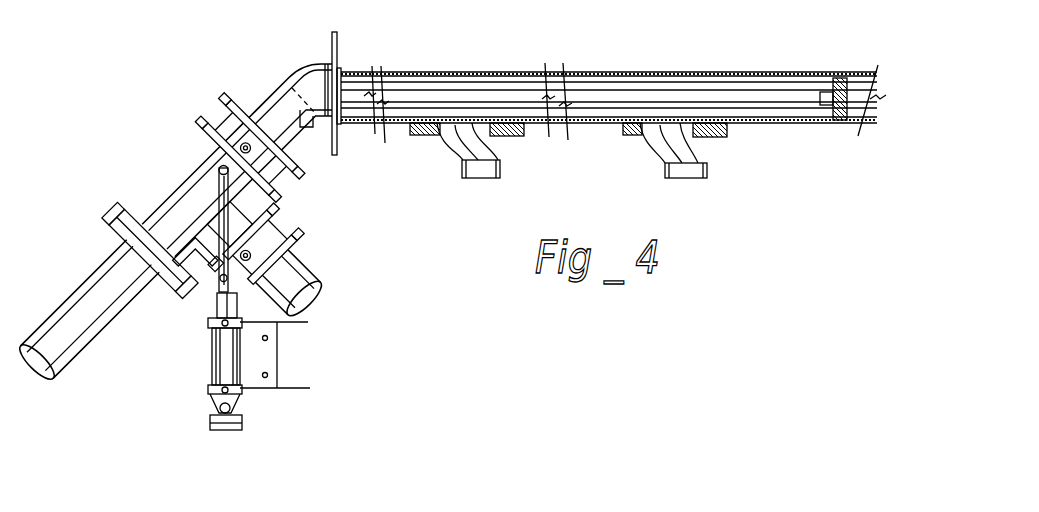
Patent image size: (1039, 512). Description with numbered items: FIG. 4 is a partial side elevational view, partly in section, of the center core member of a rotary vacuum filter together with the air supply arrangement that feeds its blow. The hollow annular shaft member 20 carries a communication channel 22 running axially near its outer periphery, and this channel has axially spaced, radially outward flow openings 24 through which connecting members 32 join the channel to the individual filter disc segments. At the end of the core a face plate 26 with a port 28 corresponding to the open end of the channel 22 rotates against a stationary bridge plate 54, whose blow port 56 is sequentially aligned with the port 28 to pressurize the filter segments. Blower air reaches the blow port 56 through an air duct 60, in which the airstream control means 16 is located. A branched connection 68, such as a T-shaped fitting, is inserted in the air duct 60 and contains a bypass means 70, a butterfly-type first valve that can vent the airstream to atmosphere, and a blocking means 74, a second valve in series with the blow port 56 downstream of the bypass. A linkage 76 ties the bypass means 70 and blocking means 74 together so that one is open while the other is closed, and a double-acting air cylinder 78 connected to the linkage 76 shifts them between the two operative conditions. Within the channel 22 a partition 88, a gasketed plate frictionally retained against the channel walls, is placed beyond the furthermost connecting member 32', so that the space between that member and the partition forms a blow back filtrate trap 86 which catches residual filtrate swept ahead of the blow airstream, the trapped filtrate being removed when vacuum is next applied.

The airstream control means 16 is at (172, 170).
The hollow annular shaft member 20 is at (418, 128).
The communication channel 22 is at (652, 72).
The flow opening 24 is at (480, 168).
The face plate 26 is at (337, 60).
The port 28 is at (343, 88).
The connecting member 32 is at (480, 150).
The furthermost connecting member 32' is at (698, 149).
The stationary bridge plate 54 is at (332, 50).
The blow port 56 is at (328, 90).
The air duct 60 is at (262, 97).
The branched connection 68 is at (163, 212).
The bypass means 70 is at (272, 226).
The blocking means 74 is at (226, 120).
The linkage 76 is at (227, 207).
The air cylinder 78 is at (214, 354).
The blow back filtrate trap 86 is at (777, 94).
The partition 88 is at (836, 77).